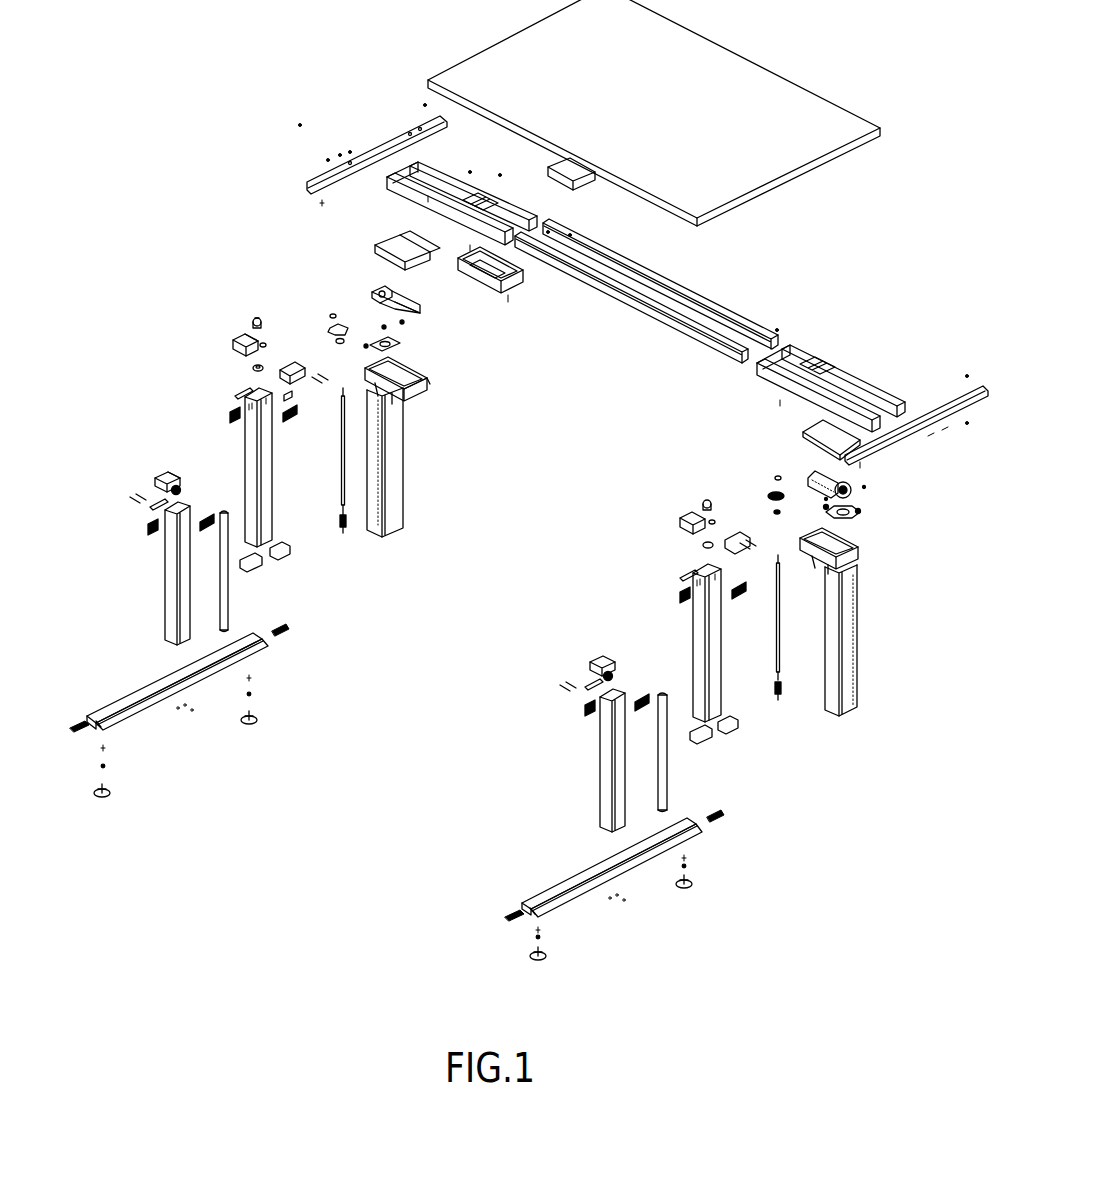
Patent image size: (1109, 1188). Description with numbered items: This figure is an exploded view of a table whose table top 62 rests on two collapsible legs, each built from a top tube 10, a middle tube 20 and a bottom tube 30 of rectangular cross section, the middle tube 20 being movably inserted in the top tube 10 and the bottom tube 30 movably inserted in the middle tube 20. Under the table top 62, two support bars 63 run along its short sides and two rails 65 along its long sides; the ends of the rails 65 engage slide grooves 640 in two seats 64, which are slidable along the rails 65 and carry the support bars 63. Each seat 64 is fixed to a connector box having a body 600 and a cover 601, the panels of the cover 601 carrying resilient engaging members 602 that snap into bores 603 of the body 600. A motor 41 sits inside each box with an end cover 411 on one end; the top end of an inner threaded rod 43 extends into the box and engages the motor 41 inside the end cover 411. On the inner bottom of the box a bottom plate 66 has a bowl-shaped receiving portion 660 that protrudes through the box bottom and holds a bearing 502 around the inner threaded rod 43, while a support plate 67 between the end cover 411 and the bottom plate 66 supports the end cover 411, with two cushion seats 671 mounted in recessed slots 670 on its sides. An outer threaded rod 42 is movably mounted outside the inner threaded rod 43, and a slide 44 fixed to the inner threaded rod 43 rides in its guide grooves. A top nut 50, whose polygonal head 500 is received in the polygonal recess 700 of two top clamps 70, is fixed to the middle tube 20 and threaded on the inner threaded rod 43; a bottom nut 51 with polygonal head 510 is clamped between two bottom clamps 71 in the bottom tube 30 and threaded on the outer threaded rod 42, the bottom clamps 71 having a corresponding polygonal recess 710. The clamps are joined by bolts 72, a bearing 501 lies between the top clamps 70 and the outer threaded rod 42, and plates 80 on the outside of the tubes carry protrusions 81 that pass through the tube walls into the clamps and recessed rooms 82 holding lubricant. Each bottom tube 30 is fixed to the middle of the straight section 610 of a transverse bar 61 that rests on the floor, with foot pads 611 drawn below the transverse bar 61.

The top tube 10 is at (393, 466).
The middle tube 20 is at (265, 460).
The bottom tube 30 is at (167, 594).
The motor 41 is at (432, 322).
The end cover 411 is at (392, 290).
The outer threaded rod 42 is at (229, 606).
The inner threaded rod 43 is at (340, 495).
The slide 44 is at (340, 525).
The top nut 50 is at (260, 320).
The polygonal head 500 is at (255, 320).
The bearing 501 is at (252, 370).
The bearing 502 is at (333, 314).
The bottom nut 51 is at (178, 486).
The polygonal head 510 is at (181, 490).
The transverse bar 61 is at (262, 651).
The straight section 610 is at (105, 729).
The foot pad 611 is at (112, 791).
The table top 62 is at (507, 46).
The support bar 63 is at (306, 187).
The seat 64 is at (432, 207).
The slide groove 640 is at (513, 205).
The rail 65 is at (700, 300).
The bottom plate 66 is at (337, 336).
The bowl-shaped receiving portion 660 is at (335, 328).
The support plate 67 is at (395, 345).
The recessed slot 670 is at (396, 327).
The cushion seat 671 is at (405, 322).
The body 600 is at (428, 386).
The cover 601 is at (416, 260).
The resilient engaging member 602 is at (392, 262).
The bore 603 is at (412, 402).
The top clamp 70 is at (232, 350).
The polygonal recess 700 is at (240, 335).
The bottom clamp 71 is at (156, 478).
The lower slider body 710 is at (160, 472).
The bolt 72 is at (312, 377).
The plate 80 is at (232, 399).
The protrusion 81 is at (150, 508).
The recessed room 82 is at (147, 528).